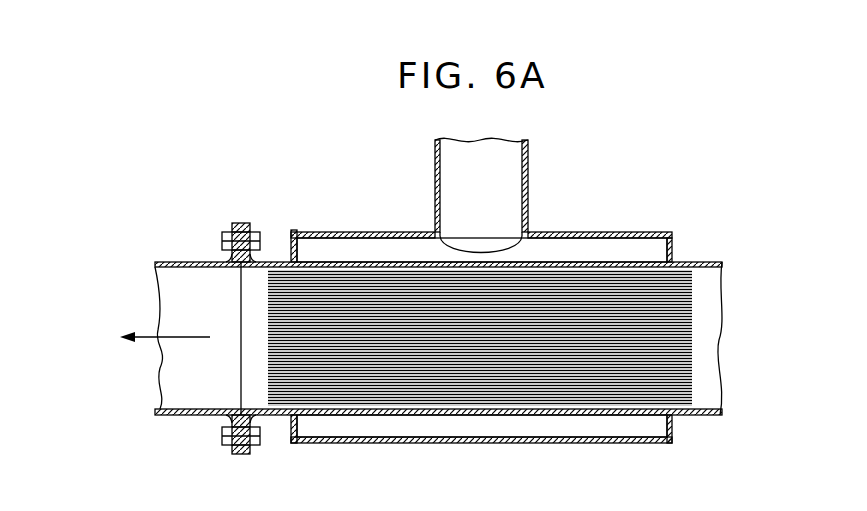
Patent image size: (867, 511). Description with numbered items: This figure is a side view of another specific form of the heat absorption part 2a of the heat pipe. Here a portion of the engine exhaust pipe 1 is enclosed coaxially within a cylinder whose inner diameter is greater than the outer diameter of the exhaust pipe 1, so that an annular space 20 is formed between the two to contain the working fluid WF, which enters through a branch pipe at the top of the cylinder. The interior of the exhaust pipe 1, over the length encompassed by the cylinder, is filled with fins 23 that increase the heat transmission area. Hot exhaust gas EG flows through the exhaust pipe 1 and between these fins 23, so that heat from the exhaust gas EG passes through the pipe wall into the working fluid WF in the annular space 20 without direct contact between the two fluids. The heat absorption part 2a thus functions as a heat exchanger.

The exhaust pipe 1 is at (188, 262).
The heat absorption part 2a is at (357, 229).
The annular space 20 is at (547, 252).
The fins 23 is at (558, 385).
The working fluid WF is at (508, 165).
The exhaust gas EG is at (172, 342).